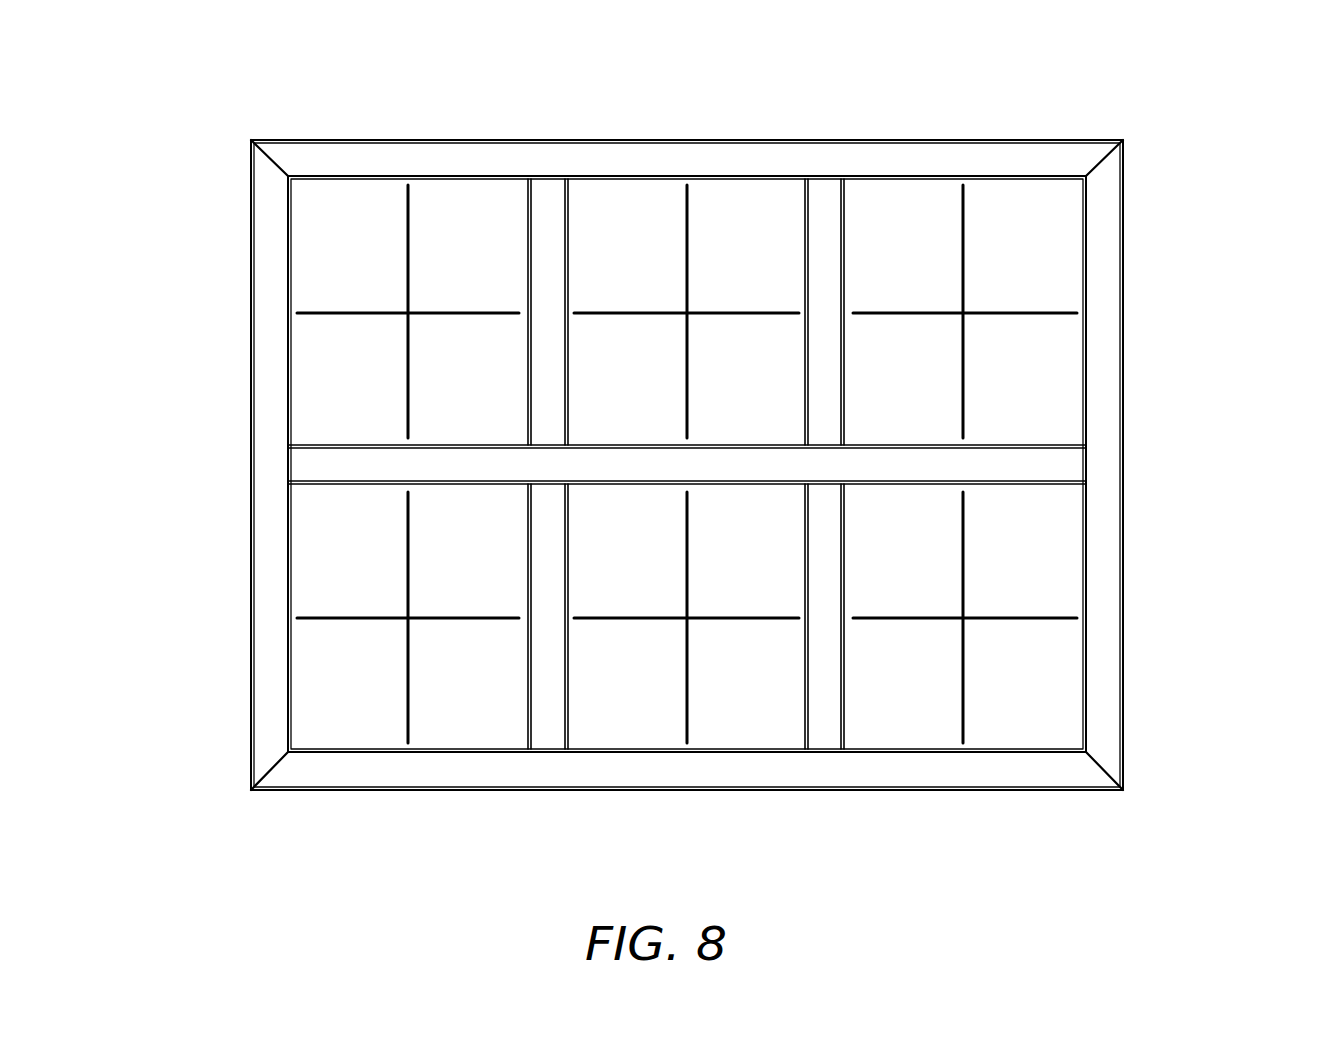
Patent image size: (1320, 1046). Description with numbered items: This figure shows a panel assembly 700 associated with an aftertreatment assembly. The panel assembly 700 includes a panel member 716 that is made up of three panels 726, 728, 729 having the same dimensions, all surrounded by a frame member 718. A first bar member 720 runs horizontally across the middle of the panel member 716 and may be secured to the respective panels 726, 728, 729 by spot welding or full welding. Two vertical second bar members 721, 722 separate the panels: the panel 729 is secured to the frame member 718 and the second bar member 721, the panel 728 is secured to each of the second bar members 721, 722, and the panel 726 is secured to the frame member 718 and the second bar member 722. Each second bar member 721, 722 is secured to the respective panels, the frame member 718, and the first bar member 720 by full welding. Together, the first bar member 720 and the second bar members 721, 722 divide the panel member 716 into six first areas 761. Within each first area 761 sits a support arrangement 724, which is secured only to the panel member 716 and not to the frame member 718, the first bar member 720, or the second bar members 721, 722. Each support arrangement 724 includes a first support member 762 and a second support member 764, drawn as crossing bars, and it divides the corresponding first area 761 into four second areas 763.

The panel assembly 700 is at (1182, 97).
The frame member 718 is at (1156, 292).
The first bar member 720 is at (1044, 466).
The second bar member 721 is at (542, 218).
The second bar member 722 is at (822, 220).
The support arrangement 724 is at (675, 380).
The panel 726 is at (1027, 707).
The panel 728 is at (760, 707).
The panel 729 is at (478, 707).
The panel member 716 is at (908, 692).
The first area 761 is at (718, 376).
The first support member 762 is at (336, 310).
The second area 763 is at (332, 572).
The second support member 764 is at (403, 222).